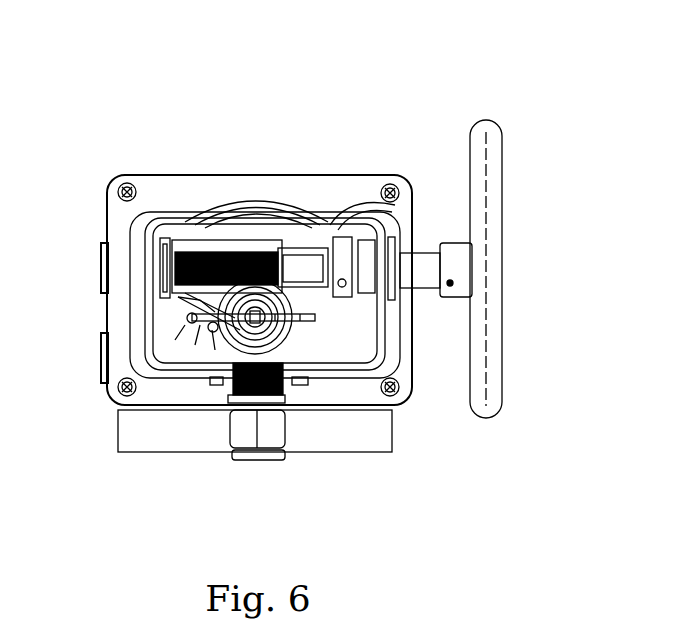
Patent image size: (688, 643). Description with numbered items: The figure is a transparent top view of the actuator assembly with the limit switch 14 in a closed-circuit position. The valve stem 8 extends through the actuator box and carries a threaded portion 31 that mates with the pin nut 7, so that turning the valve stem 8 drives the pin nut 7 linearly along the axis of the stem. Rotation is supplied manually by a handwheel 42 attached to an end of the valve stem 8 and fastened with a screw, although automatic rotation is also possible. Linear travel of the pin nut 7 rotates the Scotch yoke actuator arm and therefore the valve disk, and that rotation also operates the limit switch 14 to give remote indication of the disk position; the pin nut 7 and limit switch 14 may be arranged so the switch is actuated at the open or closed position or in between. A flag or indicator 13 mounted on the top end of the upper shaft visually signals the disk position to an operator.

The pin nut 7 is at (293, 253).
The valve stem 8 is at (422, 252).
The flag or indicator 13 is at (302, 320).
The limit switch 14 is at (185, 312).
The threaded portion 31 is at (213, 255).
The handwheel 42 is at (498, 132).